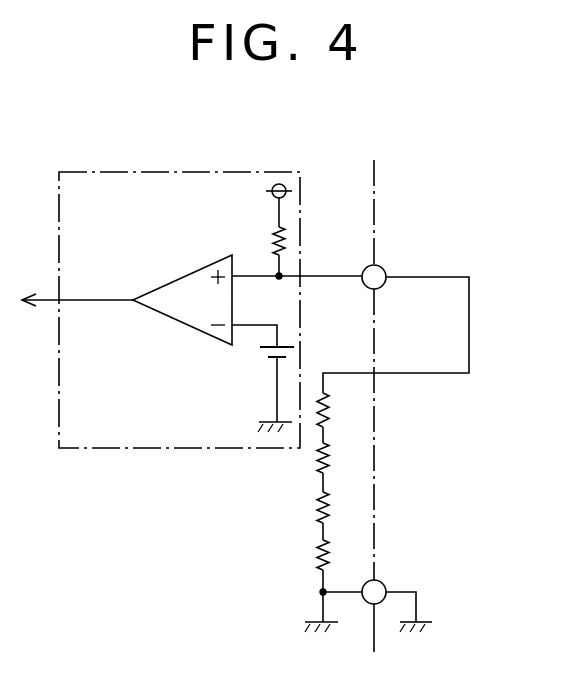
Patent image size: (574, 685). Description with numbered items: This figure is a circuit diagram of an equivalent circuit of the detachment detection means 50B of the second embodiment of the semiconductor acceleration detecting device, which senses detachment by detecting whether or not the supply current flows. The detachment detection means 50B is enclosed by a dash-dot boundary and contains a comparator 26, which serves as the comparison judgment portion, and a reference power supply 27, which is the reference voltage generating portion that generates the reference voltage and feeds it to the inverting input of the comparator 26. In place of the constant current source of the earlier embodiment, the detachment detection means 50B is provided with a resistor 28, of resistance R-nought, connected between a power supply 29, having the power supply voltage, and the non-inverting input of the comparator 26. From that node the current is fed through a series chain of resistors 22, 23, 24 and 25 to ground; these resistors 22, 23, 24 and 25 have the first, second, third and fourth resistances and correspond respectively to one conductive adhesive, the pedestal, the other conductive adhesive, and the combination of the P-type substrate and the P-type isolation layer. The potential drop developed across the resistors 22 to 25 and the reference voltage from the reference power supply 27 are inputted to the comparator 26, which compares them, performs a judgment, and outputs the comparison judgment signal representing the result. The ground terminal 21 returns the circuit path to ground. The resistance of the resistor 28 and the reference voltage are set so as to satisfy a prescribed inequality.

The detachment detection means 50B is at (192, 172).
The power supply 29 is at (272, 192).
The resistor 28 is at (288, 238).
The comparator 26 is at (160, 320).
The reference power supply 27 is at (262, 358).
The resistor 22 is at (333, 412).
The resistor 23 is at (333, 459).
The resistor 24 is at (333, 511).
The resistor 25 is at (333, 557).
The ground terminal 21 is at (420, 614).